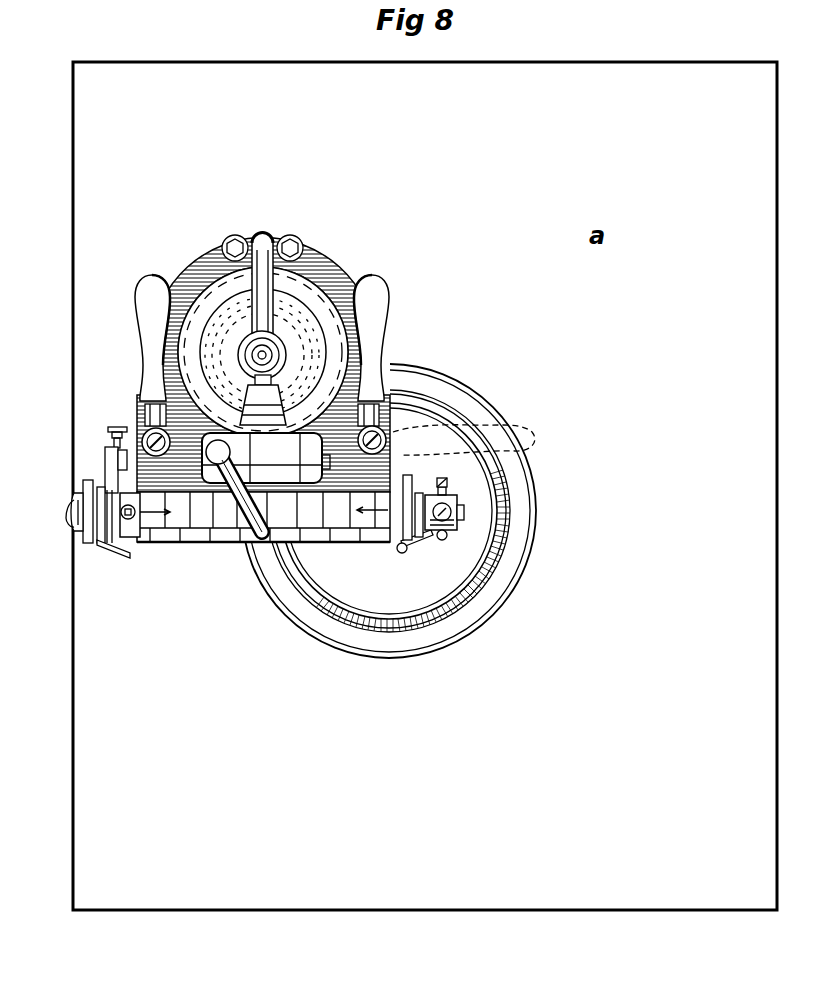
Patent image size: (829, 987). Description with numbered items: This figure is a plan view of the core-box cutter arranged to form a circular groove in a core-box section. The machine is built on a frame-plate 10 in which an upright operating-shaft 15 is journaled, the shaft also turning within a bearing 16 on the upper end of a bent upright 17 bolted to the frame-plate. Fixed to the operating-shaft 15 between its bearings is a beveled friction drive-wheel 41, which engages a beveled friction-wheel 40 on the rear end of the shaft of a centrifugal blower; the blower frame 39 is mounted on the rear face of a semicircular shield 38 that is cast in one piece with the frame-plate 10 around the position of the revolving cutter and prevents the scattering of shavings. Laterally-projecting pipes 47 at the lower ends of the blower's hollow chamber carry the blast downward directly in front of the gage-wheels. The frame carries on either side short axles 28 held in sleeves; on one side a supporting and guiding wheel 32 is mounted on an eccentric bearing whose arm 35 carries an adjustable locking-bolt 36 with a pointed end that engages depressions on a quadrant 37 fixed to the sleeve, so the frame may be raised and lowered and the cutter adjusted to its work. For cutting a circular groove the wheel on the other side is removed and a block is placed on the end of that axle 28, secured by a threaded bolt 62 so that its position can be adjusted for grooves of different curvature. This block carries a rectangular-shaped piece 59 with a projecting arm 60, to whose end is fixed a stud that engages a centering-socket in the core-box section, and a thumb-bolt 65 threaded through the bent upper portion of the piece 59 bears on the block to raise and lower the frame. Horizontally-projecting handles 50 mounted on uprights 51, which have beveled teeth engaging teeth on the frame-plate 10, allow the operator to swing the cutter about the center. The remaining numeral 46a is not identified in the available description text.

The frame-plate 10 is at (330, 272).
The operating-shaft 15 is at (256, 356).
The bearing 16 is at (270, 348).
The bent upright 17 is at (268, 240).
The short axle 28 is at (459, 518).
The supporting and guiding wheel 32 is at (90, 533).
The arm 35 is at (113, 458).
The adjustable locking-bolt 36 is at (113, 431).
The quadrant 37 is at (93, 480).
The semicircular shield 38 is at (318, 522).
The blower frame 39 is at (266, 458).
The beveled friction-wheel 40 is at (260, 401).
The beveled friction drive-wheel 41 is at (263, 352).
The base plate 46a is at (360, 545).
The laterally-projecting pipe 47 is at (127, 554).
The handle 50 is at (156, 311).
The upright 51 is at (150, 436).
The rectangular-shaped piece 59 is at (448, 533).
The projecting arm 60 is at (417, 496).
The threaded bolt 62 is at (445, 481).
The thumb-bolt 65 is at (451, 506).